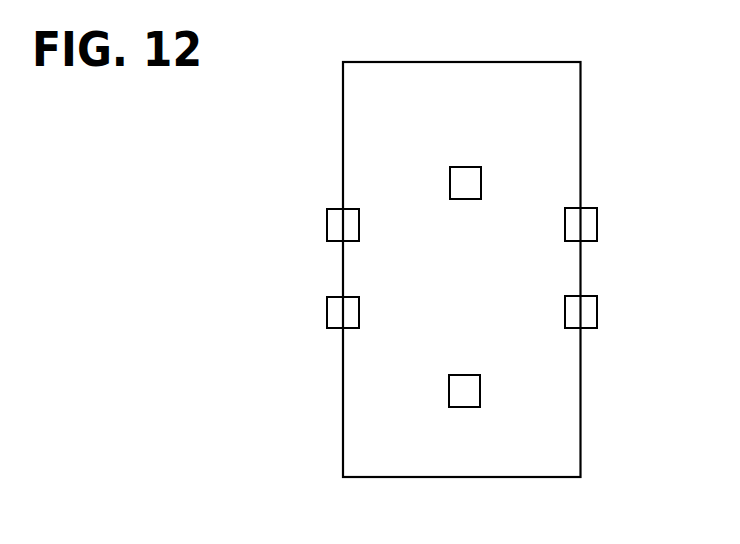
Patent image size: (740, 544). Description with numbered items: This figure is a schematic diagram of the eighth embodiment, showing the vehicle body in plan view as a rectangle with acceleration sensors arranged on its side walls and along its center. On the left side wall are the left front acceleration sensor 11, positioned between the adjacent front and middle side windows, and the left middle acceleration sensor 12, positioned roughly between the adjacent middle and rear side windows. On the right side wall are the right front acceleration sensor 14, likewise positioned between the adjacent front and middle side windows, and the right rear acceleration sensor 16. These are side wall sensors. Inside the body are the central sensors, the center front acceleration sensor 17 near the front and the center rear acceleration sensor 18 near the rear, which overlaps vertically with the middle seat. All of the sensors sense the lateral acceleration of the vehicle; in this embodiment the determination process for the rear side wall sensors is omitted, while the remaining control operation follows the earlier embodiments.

The left front acceleration sensor 11 is at (337, 209).
The left middle acceleration sensor 12 is at (337, 297).
The right front acceleration sensor 14 is at (587, 208).
The right rear acceleration sensor 16 is at (587, 296).
The center front acceleration sensor 17 is at (468, 167).
The center rear acceleration sensor 18 is at (469, 407).